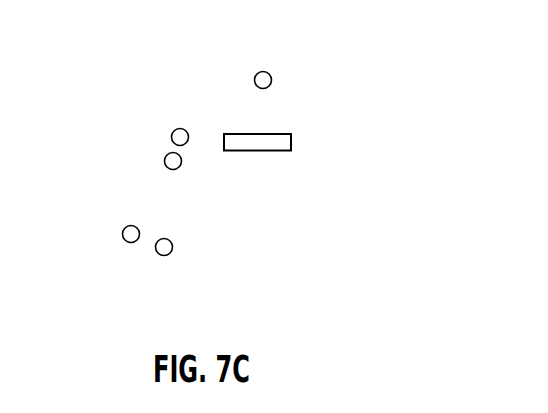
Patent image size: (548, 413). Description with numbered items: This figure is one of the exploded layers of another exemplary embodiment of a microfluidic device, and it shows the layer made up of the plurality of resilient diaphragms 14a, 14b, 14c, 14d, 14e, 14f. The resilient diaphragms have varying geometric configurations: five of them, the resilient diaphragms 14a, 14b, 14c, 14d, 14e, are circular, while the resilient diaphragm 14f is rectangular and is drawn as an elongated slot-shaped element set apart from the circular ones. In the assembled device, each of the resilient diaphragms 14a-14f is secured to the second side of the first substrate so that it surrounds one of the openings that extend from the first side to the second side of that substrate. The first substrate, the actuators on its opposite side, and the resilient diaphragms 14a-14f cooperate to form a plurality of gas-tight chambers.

The resilient diaphragm 14a is at (160, 254).
The resilient diaphragm 14b is at (125, 228).
The resilient diaphragm 14c is at (167, 168).
The resilient diaphragm 14d is at (173, 130).
The resilient diaphragm 14e is at (270, 74).
The resilient diaphragm 14f is at (291, 141).